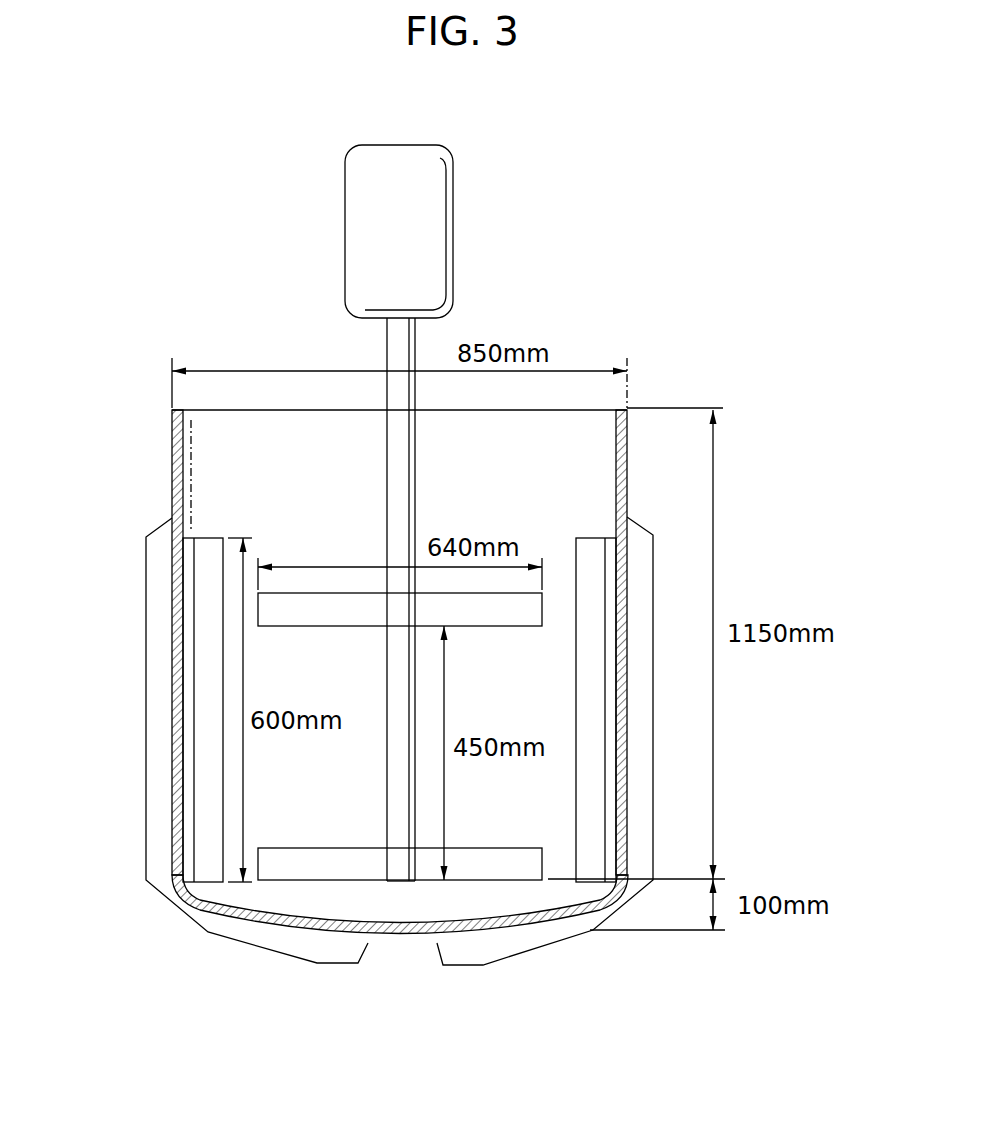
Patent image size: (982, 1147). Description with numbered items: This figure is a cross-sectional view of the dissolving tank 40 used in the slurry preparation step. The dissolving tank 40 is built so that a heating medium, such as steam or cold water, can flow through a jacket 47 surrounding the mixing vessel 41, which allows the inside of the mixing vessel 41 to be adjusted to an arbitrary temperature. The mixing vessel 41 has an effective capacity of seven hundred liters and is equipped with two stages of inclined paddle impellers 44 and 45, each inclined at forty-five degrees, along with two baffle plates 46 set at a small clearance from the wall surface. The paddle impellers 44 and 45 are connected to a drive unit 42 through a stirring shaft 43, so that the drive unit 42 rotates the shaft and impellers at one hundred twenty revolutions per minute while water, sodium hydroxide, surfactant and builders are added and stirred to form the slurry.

The dissolving tank 40 is at (624, 165).
The mixing vessel 41 is at (624, 459).
The drive unit 42 is at (433, 222).
The stirring shaft 43 is at (395, 347).
The inclined paddle impeller 44 is at (297, 615).
The inclined paddle impeller 45 is at (293, 860).
The baffle plates 46 is at (590, 550).
The jacket 47 is at (640, 565).